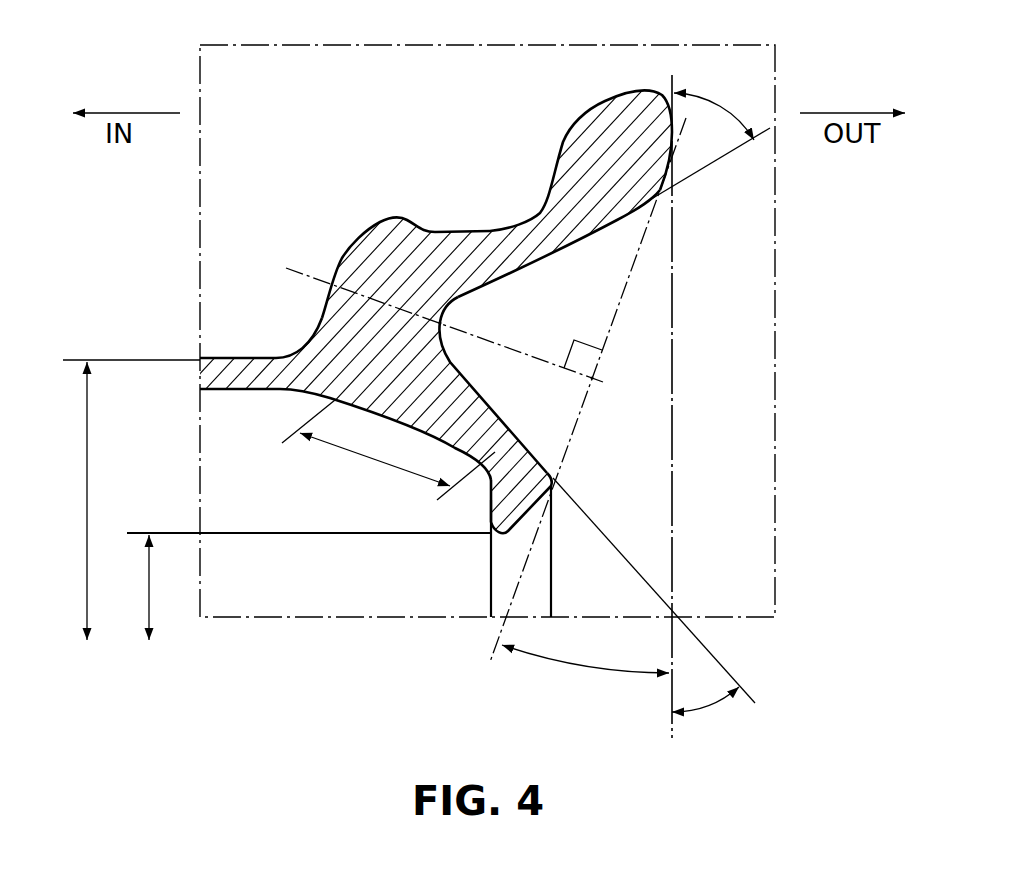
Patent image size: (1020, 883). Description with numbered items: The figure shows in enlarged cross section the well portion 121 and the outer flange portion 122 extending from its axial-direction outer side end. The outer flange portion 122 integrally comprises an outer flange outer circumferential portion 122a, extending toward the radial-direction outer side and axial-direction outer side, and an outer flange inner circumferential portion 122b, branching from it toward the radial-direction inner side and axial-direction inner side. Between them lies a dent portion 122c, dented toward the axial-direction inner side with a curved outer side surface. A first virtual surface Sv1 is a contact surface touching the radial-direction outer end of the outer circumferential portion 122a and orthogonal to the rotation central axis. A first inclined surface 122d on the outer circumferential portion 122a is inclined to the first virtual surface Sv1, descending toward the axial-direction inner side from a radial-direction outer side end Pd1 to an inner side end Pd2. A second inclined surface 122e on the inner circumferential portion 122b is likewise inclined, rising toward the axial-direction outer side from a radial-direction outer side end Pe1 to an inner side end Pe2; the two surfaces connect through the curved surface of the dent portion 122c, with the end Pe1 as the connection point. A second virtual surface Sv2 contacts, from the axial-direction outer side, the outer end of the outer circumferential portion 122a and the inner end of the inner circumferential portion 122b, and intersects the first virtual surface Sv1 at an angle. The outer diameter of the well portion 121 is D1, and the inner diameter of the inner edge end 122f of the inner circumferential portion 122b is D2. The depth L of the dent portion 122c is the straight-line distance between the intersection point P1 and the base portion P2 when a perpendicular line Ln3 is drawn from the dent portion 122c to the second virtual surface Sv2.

The well portion 121 is at (241, 350).
The outer flange portion 122 is at (503, 342).
The outer flange outer circumferential portion 122a is at (613, 122).
The outer flange inner circumferential portion 122b is at (447, 410).
The dent portion 122c is at (447, 331).
The first inclined surface 122d is at (608, 229).
The second inclined surface 122e is at (531, 447).
The inner edge end 122f is at (509, 544).
The intersection point P1 is at (604, 376).
The base portion P2 is at (437, 318).
The radial-direction outer side end Pd1 is at (633, 214).
The radial-direction inner side end Pd2 is at (478, 308).
The radial-direction outer side end Pe1 is at (463, 352).
The radial-direction inner side end Pe2 is at (548, 470).
The first virtual surface Sv1 is at (678, 265).
The second virtual surface Sv2 is at (561, 483).
The perpendicular line Ln3 is at (297, 262).
The depth of the dent portion L is at (388, 454).
The outer diameter of the well portion D1 is at (65, 501).
The inner diameter of the inner edge end D2 is at (299, 586).